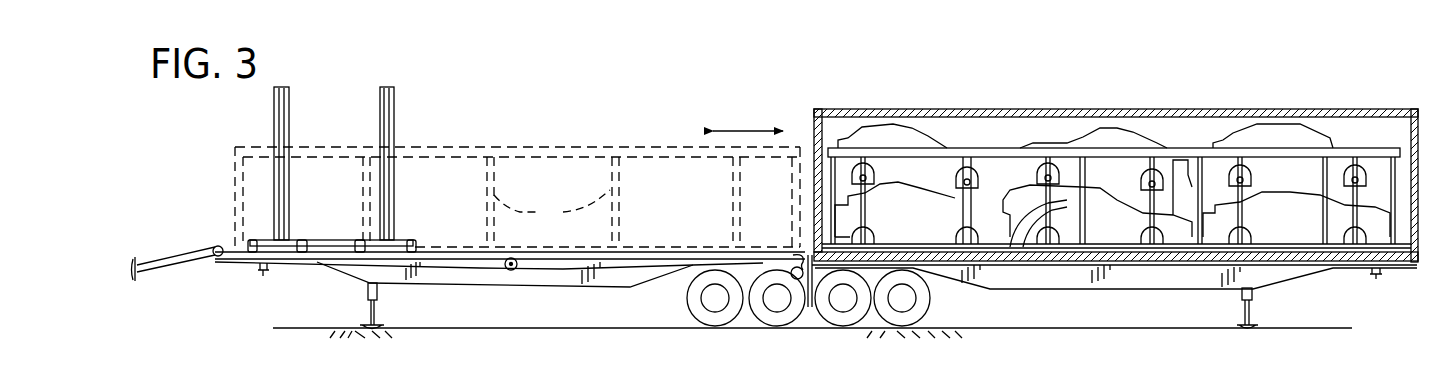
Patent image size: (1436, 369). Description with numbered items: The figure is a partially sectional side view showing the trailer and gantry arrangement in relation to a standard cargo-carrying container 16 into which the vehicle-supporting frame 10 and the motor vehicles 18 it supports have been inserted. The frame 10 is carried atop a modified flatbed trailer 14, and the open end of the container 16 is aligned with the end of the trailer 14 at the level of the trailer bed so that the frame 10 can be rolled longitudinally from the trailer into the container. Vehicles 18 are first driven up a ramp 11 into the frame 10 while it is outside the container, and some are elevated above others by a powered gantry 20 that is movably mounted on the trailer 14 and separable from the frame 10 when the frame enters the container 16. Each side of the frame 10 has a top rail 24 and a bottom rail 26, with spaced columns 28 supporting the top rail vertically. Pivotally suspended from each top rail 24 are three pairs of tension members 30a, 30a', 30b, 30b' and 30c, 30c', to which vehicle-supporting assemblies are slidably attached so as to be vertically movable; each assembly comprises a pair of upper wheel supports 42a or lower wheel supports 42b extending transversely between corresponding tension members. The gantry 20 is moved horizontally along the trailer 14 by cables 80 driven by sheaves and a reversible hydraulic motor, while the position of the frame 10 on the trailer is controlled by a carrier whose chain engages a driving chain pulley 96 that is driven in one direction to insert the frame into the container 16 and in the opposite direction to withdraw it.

The vehicle-supporting frame 10 is at (630, 140).
The ramp 11 is at (167, 258).
The flatbed trailer 14 is at (444, 285).
The container 16 is at (880, 108).
The motor vehicle 18 is at (1233, 133).
The gantry 20 is at (407, 116).
The top rail 24 is at (522, 146).
The bottom rail 26 is at (917, 244).
The columns 28 is at (1315, 205).
The tension member 30a is at (1359, 229).
The tension member 30a' is at (1265, 236).
The tension member 30b is at (1171, 238).
The tension member 30b' is at (1046, 238).
The tension member 30c is at (934, 200).
The tension member 30c' is at (893, 200).
The upper wheel support 42a is at (1150, 180).
The lower wheel support 42b is at (1140, 222).
The cables 80 is at (570, 271).
The driving chain pulley 96 is at (796, 268).